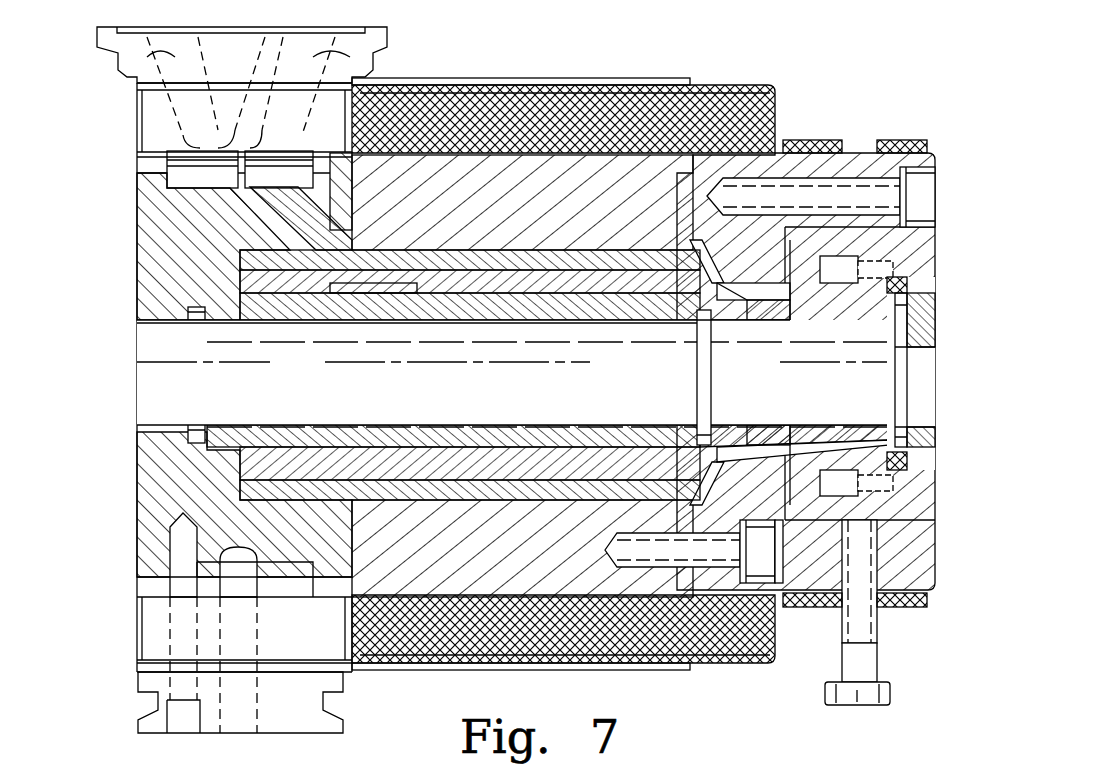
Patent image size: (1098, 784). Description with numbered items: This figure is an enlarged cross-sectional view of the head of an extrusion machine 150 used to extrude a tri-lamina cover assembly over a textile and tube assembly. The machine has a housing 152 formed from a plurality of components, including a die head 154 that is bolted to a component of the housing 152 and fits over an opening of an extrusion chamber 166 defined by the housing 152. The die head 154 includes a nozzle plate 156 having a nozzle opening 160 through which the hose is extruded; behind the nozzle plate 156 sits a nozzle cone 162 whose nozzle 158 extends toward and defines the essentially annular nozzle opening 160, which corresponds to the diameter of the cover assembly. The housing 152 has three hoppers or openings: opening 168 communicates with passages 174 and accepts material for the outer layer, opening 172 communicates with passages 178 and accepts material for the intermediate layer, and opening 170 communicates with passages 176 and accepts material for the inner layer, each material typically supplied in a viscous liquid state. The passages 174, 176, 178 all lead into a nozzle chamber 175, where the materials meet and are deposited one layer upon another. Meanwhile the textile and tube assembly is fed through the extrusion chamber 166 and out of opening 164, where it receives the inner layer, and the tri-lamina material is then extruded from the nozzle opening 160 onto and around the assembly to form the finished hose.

The extrusion machine 150 is at (980, 85).
The housing 152 is at (553, 78).
The die head 154 is at (815, 122).
The nozzle plate 156 is at (892, 432).
The nozzle 158 is at (890, 330).
The nozzle opening 160 is at (875, 312).
The nozzle cone 162 is at (770, 308).
The opening 164 is at (755, 384).
The extrusion chamber 166 is at (163, 377).
The opening 168 is at (340, 50).
The opening 170 is at (118, 68).
The opening 172 is at (240, 700).
The passages 174 is at (340, 278).
The nozzle chamber 175 is at (804, 452).
The passages 176 is at (300, 282).
The passages 178 is at (311, 470).